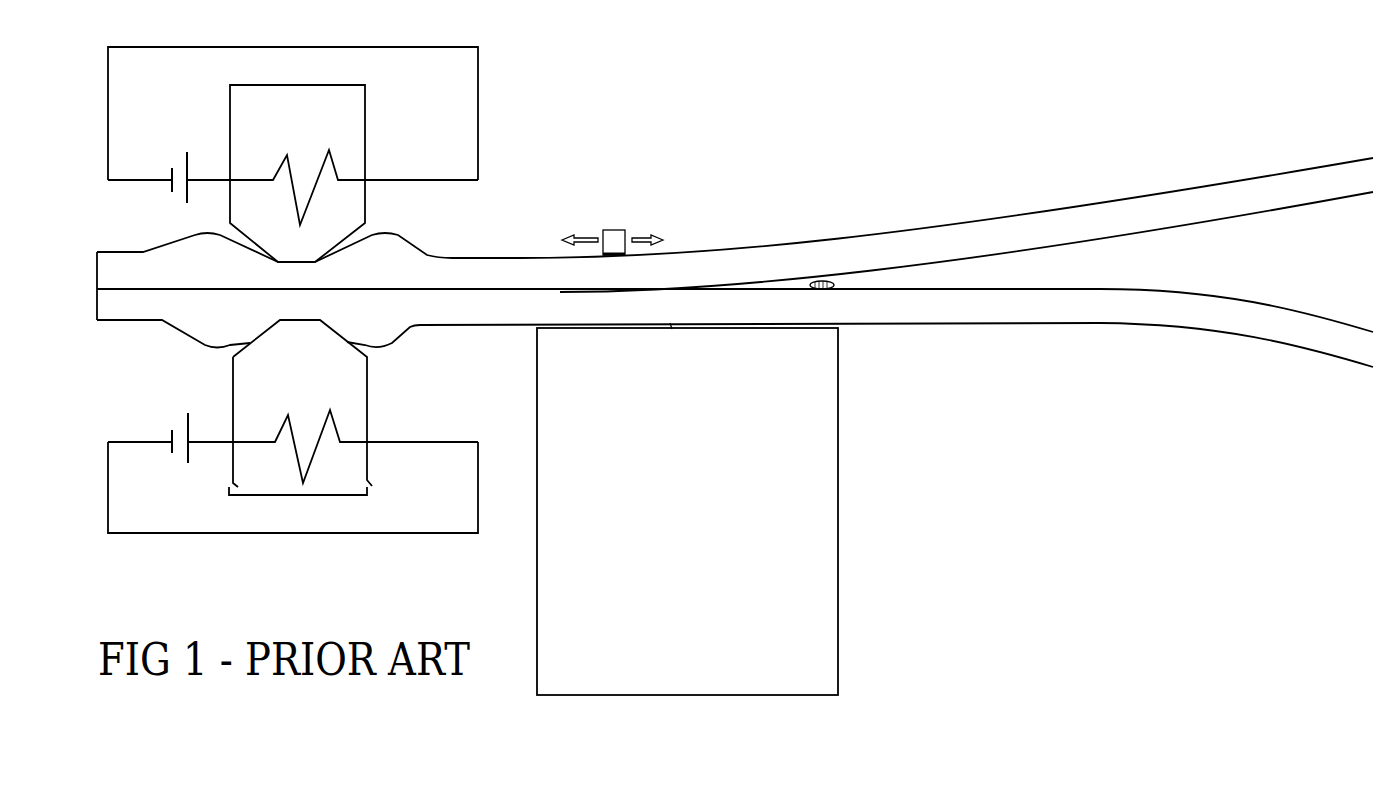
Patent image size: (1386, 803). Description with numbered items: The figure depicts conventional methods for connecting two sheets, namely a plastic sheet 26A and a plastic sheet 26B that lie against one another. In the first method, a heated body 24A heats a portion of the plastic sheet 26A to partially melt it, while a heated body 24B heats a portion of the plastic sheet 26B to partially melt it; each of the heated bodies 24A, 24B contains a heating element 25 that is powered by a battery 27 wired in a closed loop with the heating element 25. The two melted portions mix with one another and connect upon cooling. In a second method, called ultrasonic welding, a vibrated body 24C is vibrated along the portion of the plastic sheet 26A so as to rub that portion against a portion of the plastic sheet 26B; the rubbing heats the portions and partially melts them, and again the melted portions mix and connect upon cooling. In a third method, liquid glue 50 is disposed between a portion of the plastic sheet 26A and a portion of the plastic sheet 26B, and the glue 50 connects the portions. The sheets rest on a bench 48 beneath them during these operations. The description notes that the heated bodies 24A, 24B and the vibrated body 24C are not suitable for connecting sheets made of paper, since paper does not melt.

The heated body 24A is at (343, 145).
The heated body 24B is at (347, 405).
The vibrated body 24C is at (614, 247).
The heating element 25 is at (306, 173).
The plastic sheet 26A is at (767, 247).
The plastic sheet 26B is at (903, 325).
The battery 27 is at (293, 290).
The bench 48 is at (813, 453).
The glue 50 is at (834, 285).